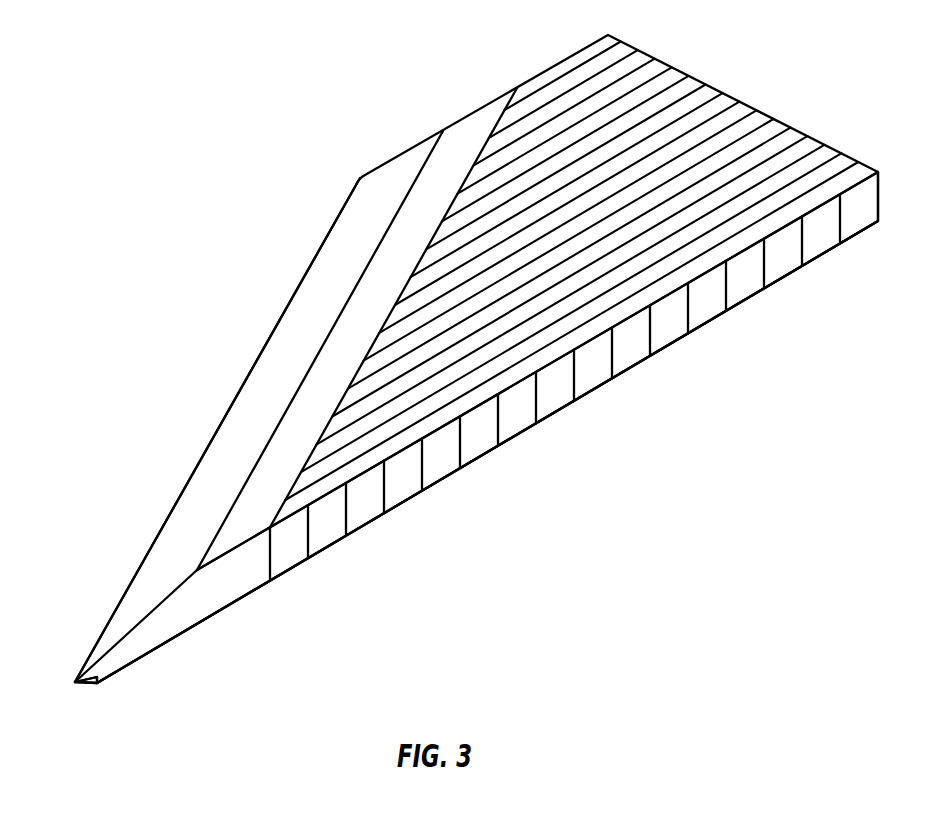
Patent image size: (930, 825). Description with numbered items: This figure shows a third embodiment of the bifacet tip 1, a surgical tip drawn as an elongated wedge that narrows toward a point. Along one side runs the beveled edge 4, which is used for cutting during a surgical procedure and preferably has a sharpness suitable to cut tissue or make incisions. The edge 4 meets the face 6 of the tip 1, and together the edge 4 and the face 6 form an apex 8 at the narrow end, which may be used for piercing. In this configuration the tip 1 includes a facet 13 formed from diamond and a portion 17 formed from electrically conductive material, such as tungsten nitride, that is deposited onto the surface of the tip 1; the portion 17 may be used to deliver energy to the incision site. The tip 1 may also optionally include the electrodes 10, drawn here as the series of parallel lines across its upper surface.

The bifacet tip 1 is at (269, 121).
The beveled edge 4 is at (214, 438).
The face 6 is at (590, 387).
The apex 8 is at (80, 688).
The electrodes 10 is at (728, 105).
The facet 13 is at (206, 610).
The portion 17 is at (466, 450).